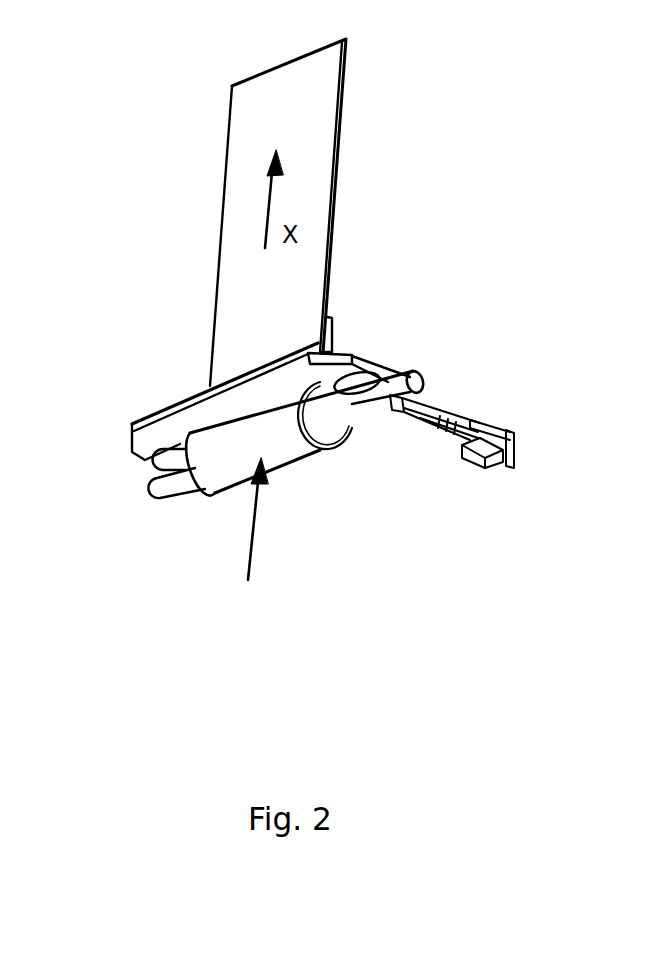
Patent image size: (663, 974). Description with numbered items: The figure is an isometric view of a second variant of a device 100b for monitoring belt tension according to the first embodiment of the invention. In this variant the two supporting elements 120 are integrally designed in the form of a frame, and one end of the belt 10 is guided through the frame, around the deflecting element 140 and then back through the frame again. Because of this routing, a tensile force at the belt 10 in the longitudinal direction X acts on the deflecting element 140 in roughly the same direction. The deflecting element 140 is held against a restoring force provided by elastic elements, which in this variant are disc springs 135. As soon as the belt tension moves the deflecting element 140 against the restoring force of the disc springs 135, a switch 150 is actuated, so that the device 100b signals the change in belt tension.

The belt 10 is at (309, 115).
The device for monitoring belt tension 100b is at (492, 148).
The supporting elements 120 is at (193, 418).
The disc springs 135 is at (153, 462).
The deflecting element 140 is at (378, 398).
The switch 150 is at (460, 413).